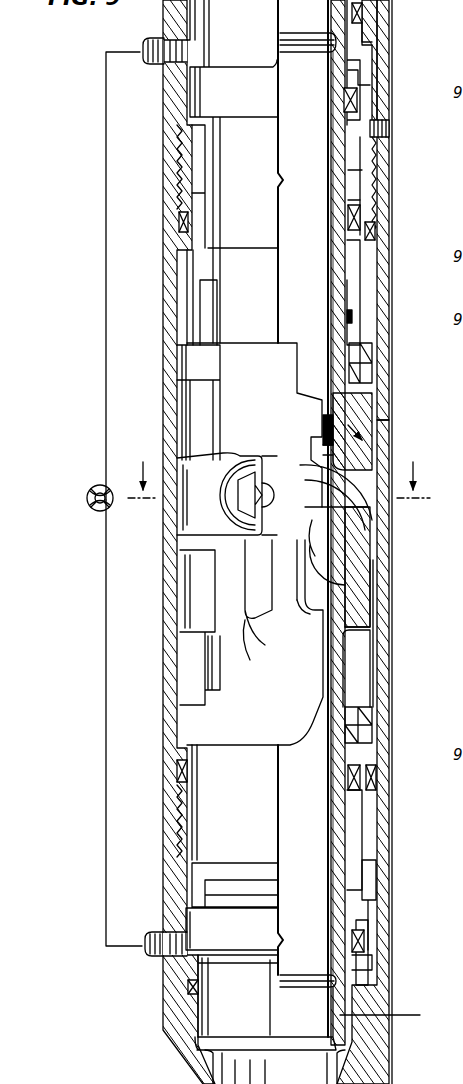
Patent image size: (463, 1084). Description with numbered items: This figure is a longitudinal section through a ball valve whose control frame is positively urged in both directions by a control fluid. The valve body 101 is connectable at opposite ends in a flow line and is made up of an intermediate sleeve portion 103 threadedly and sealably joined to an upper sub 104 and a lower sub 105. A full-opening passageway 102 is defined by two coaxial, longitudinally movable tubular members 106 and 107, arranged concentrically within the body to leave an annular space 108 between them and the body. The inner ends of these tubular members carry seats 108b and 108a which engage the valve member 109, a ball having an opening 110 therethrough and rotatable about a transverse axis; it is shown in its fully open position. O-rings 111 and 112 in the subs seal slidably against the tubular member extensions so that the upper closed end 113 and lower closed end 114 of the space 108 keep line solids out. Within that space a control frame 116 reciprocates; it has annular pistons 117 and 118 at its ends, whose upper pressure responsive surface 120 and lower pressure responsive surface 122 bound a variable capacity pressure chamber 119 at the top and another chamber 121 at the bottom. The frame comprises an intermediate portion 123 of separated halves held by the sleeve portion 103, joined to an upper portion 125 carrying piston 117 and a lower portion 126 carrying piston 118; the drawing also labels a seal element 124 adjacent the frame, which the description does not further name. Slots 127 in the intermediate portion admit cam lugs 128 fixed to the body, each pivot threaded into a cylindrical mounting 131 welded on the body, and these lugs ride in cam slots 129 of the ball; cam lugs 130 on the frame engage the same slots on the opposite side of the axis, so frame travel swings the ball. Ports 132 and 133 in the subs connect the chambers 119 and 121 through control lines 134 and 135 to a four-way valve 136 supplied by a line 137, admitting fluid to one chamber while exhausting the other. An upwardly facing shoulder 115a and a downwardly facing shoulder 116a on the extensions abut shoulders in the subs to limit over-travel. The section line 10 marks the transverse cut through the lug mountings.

The valve body 101 is at (402, 274).
The passageway 102 is at (334, 266).
The intermediate sleeve portion 103 is at (391, 590).
The upper sub 104 is at (391, 101).
The lower sub 105 is at (391, 985).
The tubular member 106 is at (332, 146).
The tubular member 107 is at (343, 786).
The annular space 108 is at (362, 661).
The seat 108a is at (374, 568).
The seat 108b is at (338, 468).
The valve member 109 is at (358, 454).
The opening 110 is at (328, 458).
The O-ring 111 is at (364, 14).
The O-ring 112 is at (187, 988).
The upper closed end 113 is at (377, 52).
The lower closed end 114 is at (364, 953).
The upwardly facing annular shoulder 115a is at (352, 90).
The control frame 116 is at (372, 302).
The downwardly facing annular shoulder 116a is at (358, 961).
The annular piston 117 is at (348, 212).
The annular piston 118 is at (340, 815).
The variable capacity pressure chamber 119 is at (353, 151).
The upper pressure responsive surface 120 is at (365, 190).
The variable capacity pressure chamber 121 is at (365, 892).
The lower pressure responsive surface 122 is at (348, 901).
The intermediate portion 123 is at (292, 708).
The seal assembly 124 is at (360, 368).
The upper portion 125 is at (362, 258).
The lower portion 126 is at (365, 800).
The slots 127 is at (263, 649).
The cam lugs 128 is at (267, 500).
The cam slots 129 is at (362, 540).
The cam lugs 130 is at (312, 616).
The cylindrical mounting 131 is at (238, 492).
The port 132 is at (176, 34).
The port 133 is at (145, 948).
The control line 134 is at (106, 218).
The control line 135 is at (106, 681).
The four-way valve 136 is at (92, 490).
The line 137 is at (80, 497).
The section line 10- 10 is at (279, 464).